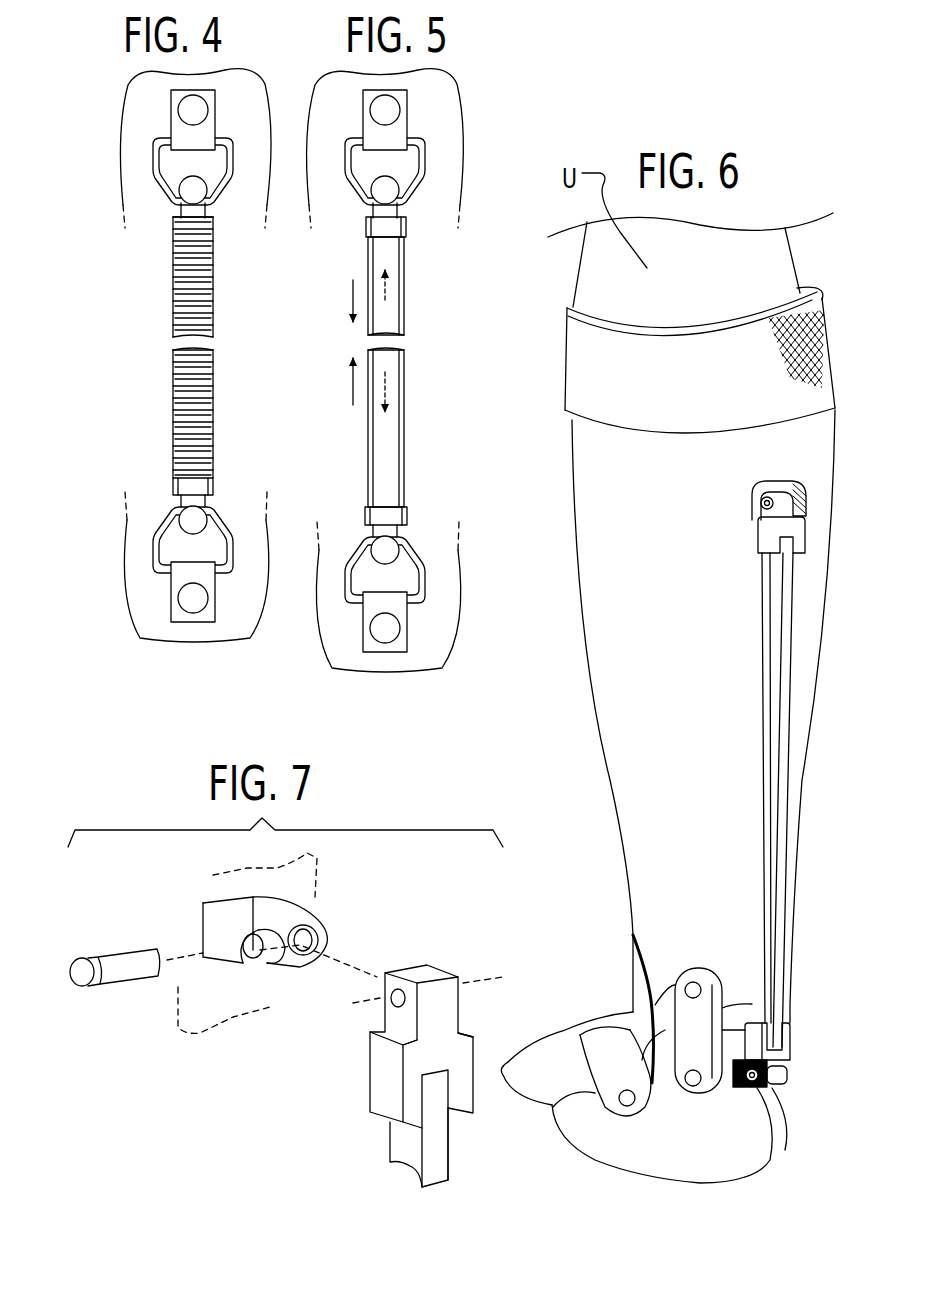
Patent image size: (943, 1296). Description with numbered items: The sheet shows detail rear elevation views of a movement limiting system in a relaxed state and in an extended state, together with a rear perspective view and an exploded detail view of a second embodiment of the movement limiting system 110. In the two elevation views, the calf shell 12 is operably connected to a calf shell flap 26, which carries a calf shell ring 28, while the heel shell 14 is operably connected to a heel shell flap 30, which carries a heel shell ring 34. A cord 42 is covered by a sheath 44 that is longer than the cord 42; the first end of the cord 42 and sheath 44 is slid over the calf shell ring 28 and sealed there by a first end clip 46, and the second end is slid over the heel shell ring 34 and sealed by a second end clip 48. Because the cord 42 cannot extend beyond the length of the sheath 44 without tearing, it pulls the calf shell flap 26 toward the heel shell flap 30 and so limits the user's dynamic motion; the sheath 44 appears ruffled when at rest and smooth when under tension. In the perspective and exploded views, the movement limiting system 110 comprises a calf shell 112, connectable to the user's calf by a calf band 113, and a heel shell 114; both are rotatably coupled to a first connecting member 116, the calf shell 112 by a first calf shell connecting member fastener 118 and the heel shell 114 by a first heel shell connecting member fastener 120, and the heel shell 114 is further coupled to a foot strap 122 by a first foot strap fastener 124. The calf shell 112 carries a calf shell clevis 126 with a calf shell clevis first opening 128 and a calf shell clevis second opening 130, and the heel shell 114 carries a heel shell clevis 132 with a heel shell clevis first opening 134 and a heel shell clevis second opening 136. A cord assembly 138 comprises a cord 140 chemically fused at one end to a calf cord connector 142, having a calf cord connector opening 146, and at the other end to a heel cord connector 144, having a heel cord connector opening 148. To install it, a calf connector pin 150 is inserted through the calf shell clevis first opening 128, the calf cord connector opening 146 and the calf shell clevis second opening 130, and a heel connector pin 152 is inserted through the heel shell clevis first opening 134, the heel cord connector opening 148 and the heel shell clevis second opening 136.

In FIG. 4, the calf shell 12 is at (138, 118).
In FIG. 5, the calf shell 12 is at (440, 120).
In FIG. 4, the heel shell 14 is at (140, 603).
In FIG. 5, the heel shell 14 is at (430, 630).
In FIG. 4, the calf shell flap 26 is at (218, 102).
In FIG. 5, the calf shell flap 26 is at (362, 100).
In FIG. 4, the calf shell ring 28 is at (172, 198).
In FIG. 5, the calf shell ring 28 is at (400, 197).
In FIG. 4, the heel shell flap 30 is at (220, 615).
In FIG. 5, the heel shell flap 30 is at (355, 648).
In FIG. 4, the heel shell ring 34 is at (155, 549).
In FIG. 5, the heel shell ring 34 is at (428, 581).
In FIG. 4, the cord 42 is at (176, 214).
In FIG. 5, the cord 42 is at (400, 223).
In FIG. 4, the sheath 44 is at (178, 392).
In FIG. 5, the sheath 44 is at (367, 437).
In FIG. 4, the first end clip 46 is at (215, 218).
In FIG. 5, the first end clip 46 is at (370, 223).
In FIG. 4, the second end clip 48 is at (175, 487).
In FIG. 5, the second end clip 48 is at (407, 516).
In FIG. 6, the movement limiting system 110 is at (851, 345).
In FIG. 6, the calf shell 112 is at (703, 716).
In FIG. 6, the calf band 113 is at (578, 367).
In FIG. 6, the heel shell 114 is at (703, 1163).
In FIG. 6, the first connecting member 116 is at (697, 1017).
In FIG. 6, the first calf shell connecting member fastener 118 is at (695, 988).
In FIG. 6, the first heel shell connecting member fastener 120 is at (675, 1097).
In FIG. 6, the foot strap 122 is at (610, 1050).
In FIG. 6, the first foot strap fastener 124 is at (623, 1110).
In FIG. 6, the calf shell clevis 126 is at (756, 494).
In FIG. 7, the calf shell clevis 126 is at (262, 1037).
In FIG. 7, the calf shell clevis first opening 128 is at (250, 952).
In FIG. 7, the calf shell clevis second opening 130 is at (313, 932).
In FIG. 6, the heel shell clevis 132 is at (748, 1082).
In FIG. 6, the heel shell clevis first opening 134 is at (788, 1074).
In FIG. 6, the heel shell clevis second opening 136 is at (790, 1080).
In FIG. 6, the cord assembly 138 is at (803, 617).
In FIG. 6, the cord 140 is at (777, 695).
In FIG. 7, the cord 140 is at (408, 1151).
In FIG. 6, the calf cord connector 142 is at (790, 524).
In FIG. 7, the calf cord connector 142 is at (388, 1092).
In FIG. 6, the heel cord connector 144 is at (791, 1052).
In FIG. 7, the calf cord connector opening 146 is at (394, 980).
In FIG. 6, the heel cord connector opening 148 is at (778, 1100).
In FIG. 6, the calf connector pin 150 is at (762, 507).
In FIG. 7, the calf connector pin 150 is at (118, 970).
In FIG. 6, the heel connector pin 152 is at (778, 1143).